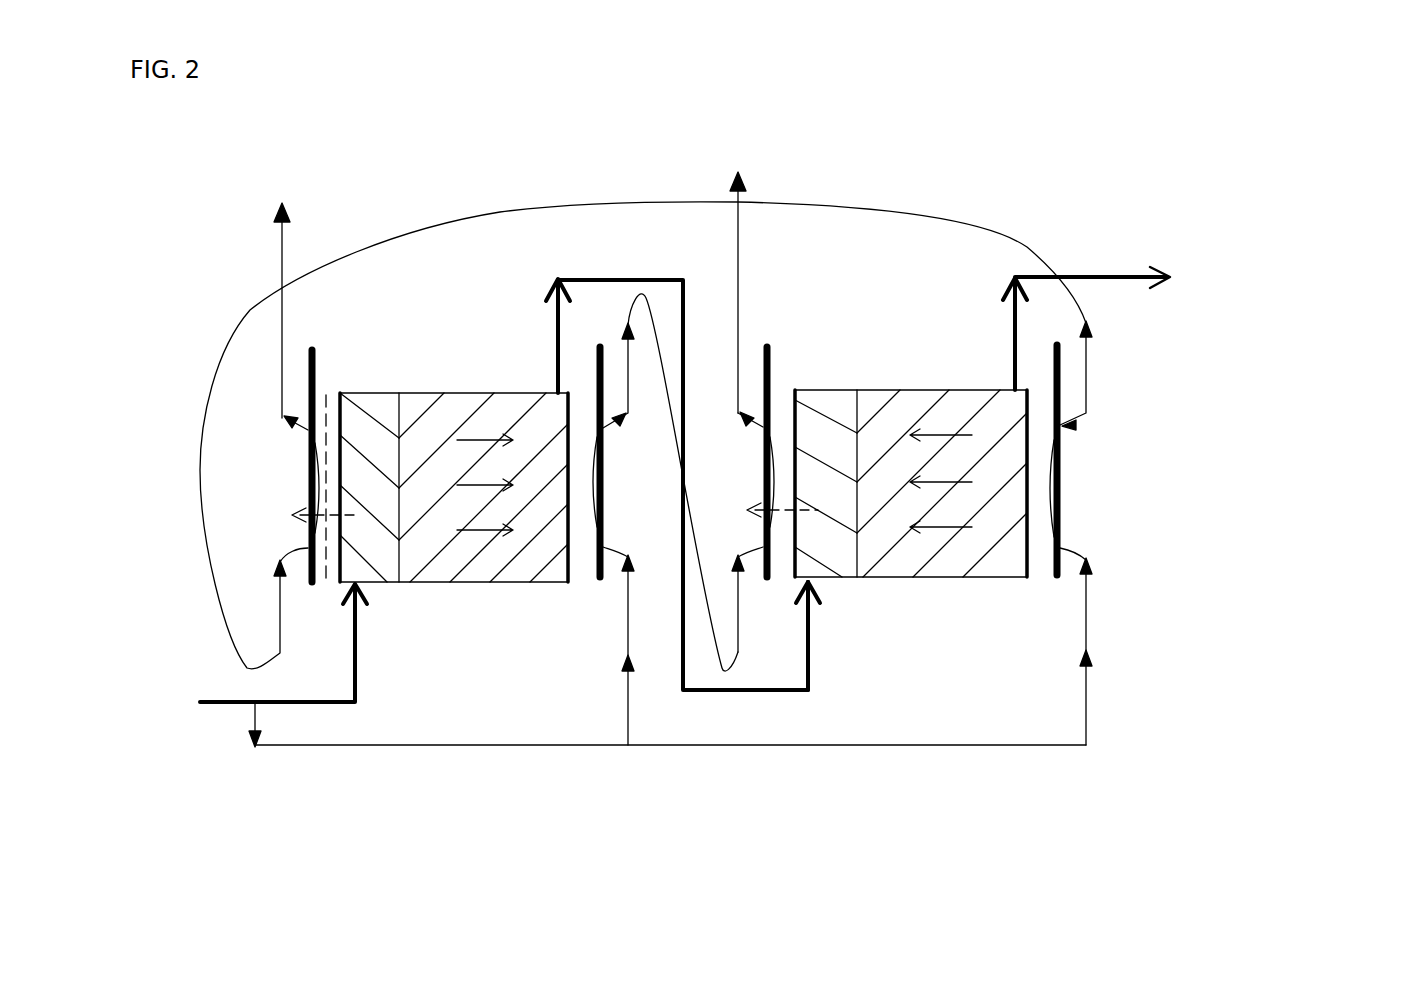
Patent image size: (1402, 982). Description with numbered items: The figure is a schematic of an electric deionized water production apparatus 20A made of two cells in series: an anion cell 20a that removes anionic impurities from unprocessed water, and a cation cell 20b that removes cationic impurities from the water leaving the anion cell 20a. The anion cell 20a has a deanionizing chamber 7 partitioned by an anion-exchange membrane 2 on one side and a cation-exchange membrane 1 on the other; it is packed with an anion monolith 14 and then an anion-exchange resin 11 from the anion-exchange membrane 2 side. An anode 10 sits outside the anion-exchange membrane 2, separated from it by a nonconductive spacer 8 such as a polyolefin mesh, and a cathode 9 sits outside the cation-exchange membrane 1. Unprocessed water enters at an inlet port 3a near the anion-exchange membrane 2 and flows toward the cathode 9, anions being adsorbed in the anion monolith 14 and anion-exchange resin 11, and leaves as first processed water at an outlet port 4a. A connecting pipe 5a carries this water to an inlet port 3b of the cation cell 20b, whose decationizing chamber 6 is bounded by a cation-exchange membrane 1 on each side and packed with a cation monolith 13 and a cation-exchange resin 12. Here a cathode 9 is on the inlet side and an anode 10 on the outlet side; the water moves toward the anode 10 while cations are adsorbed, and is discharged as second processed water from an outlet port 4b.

The cation-exchange membrane 1 is at (569, 592).
The anion-exchange membrane 2 is at (346, 392).
The inlet port 3a is at (347, 592).
The inlet port 3b is at (805, 582).
The outlet port 4a is at (555, 390).
The outlet port 4b is at (1010, 390).
The connecting pipe 5a is at (626, 276).
The decationizing chamber 6 is at (945, 582).
The deanionizing chamber 7 is at (507, 582).
The nonconductive spacer 8 is at (336, 390).
The cathode 9 is at (604, 497).
The anode 10 is at (308, 490).
The anion-exchange resin 11 is at (458, 400).
The cation-exchange resin 12 is at (915, 400).
The cation monolith 13 is at (838, 400).
The anion monolith 14 is at (383, 400).
The anion cell 20a is at (485, 292).
The cation cell 20b is at (920, 295).
The electric deionized water production apparatus 20A is at (705, 446).